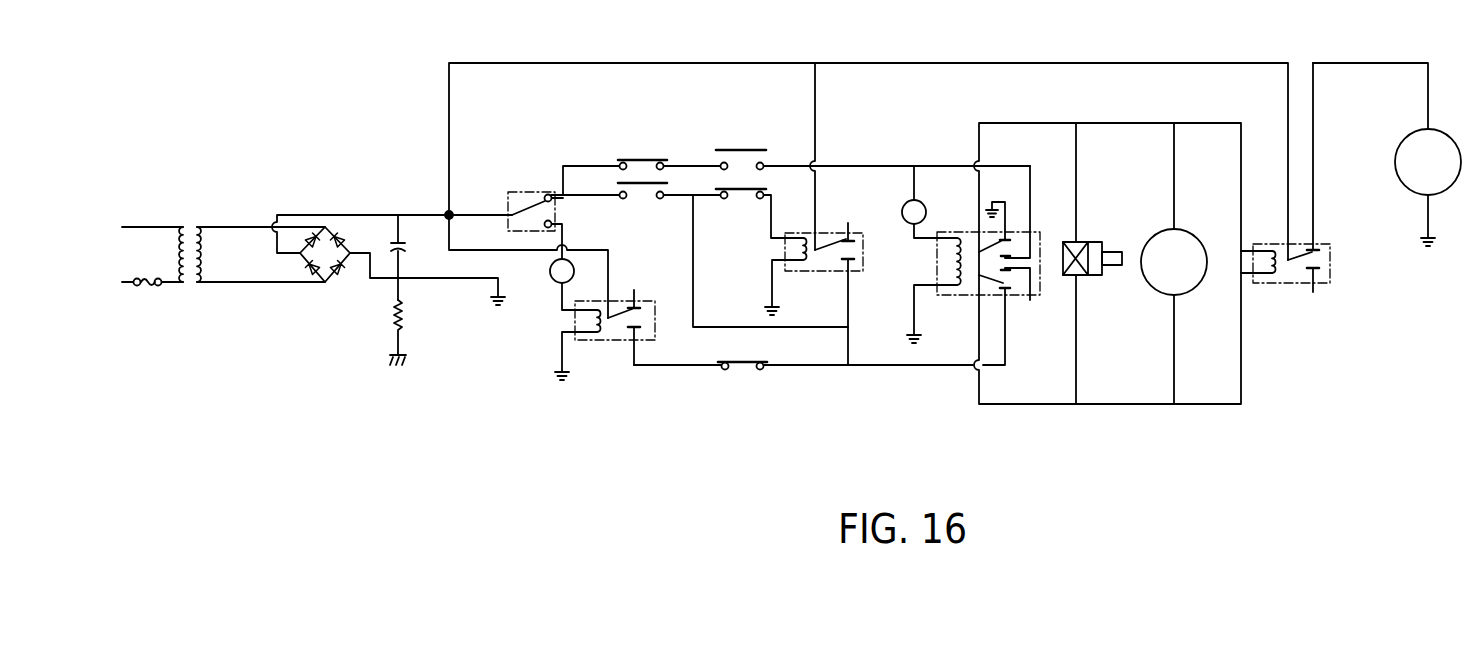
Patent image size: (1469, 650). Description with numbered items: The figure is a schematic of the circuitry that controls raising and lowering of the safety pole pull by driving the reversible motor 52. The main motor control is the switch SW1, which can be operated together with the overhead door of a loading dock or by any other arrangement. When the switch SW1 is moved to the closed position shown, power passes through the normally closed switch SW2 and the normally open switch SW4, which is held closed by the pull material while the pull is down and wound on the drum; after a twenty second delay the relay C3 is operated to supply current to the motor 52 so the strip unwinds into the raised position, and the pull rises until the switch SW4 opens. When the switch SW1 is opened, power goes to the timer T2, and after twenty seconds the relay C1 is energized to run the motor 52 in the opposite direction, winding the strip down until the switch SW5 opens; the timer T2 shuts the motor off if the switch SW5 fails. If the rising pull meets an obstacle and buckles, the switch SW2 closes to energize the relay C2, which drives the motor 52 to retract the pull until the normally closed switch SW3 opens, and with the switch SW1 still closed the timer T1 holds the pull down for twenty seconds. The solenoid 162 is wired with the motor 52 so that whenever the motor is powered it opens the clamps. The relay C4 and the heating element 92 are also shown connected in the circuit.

The main motor control switch SW1 is at (548, 192).
The normally closed switch SW2 is at (645, 183).
The normally closed switch SW3 is at (764, 189).
The normally open switch SW4 is at (773, 135).
The switch SW5 is at (745, 362).
The timer T1 is at (926, 206).
The timer T2 is at (552, 277).
The relay C1 is at (607, 342).
The relay C2 is at (857, 272).
The relay C3 is at (957, 296).
The relay C4 is at (1290, 283).
The solenoid 162 is at (1095, 276).
The motor 52 is at (1198, 290).
The heating element 92 is at (1393, 157).